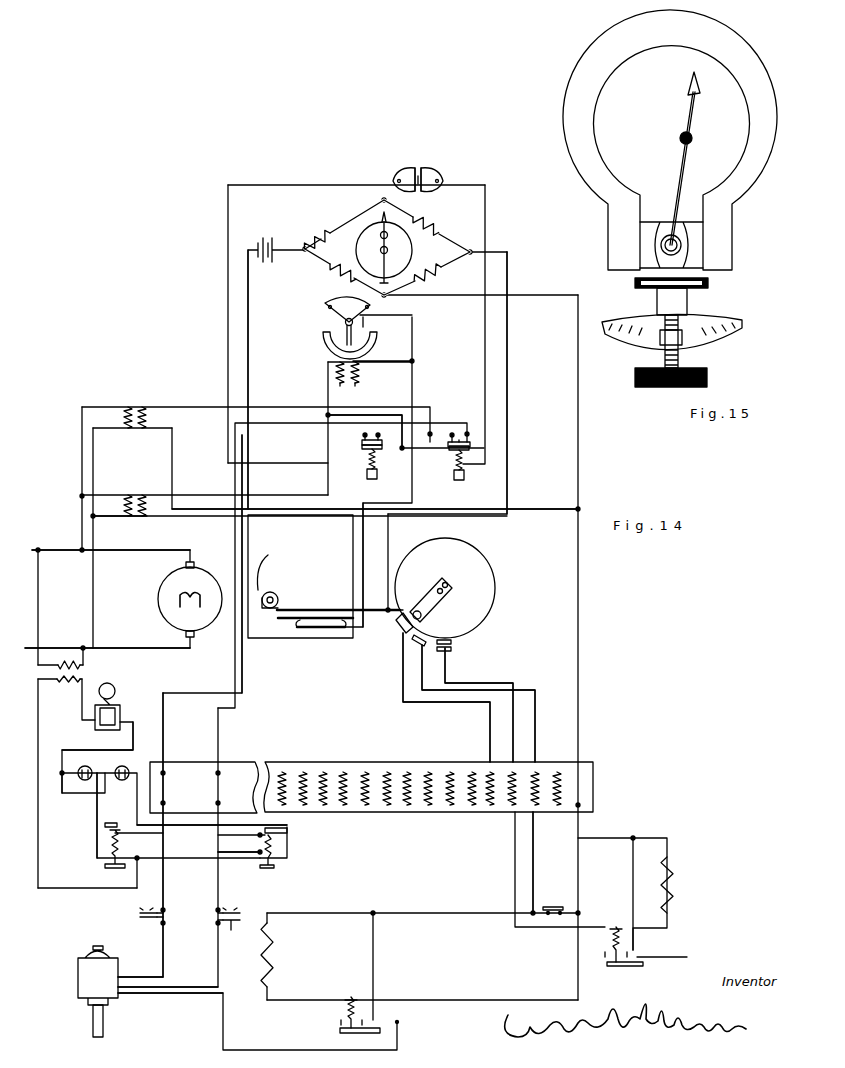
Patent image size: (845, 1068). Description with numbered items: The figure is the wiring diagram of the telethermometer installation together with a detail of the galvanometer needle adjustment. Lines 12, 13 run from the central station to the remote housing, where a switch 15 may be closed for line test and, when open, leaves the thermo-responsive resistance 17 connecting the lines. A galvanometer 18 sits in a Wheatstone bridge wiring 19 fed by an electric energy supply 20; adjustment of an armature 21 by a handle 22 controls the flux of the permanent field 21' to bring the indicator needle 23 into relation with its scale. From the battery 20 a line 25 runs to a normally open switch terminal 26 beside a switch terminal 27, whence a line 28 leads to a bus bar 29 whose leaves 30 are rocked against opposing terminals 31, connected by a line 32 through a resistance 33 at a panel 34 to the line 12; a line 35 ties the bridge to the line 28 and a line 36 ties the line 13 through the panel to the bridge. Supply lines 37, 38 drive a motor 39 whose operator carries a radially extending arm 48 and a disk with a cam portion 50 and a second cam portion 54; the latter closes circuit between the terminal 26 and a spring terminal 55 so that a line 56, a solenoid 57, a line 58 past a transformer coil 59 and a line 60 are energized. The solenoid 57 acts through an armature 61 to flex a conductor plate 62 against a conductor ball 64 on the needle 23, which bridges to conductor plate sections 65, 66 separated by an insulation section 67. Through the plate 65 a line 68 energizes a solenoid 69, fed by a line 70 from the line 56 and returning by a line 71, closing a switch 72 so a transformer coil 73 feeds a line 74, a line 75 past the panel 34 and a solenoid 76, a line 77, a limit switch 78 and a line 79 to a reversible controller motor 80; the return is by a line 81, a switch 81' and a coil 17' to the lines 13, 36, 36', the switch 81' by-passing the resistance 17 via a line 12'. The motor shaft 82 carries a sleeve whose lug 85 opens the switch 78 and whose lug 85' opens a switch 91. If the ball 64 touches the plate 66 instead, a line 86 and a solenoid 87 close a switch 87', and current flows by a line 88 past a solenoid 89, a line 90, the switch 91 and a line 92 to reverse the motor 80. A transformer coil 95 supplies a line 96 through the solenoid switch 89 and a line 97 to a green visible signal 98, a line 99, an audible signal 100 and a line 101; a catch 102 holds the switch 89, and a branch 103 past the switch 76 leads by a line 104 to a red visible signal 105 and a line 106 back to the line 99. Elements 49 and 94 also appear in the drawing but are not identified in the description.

In FIG. 14, the line 12 is at (500, 862).
In FIG. 14, the line 12' is at (516, 929).
In FIG. 14, the line 13 is at (468, 993).
In FIG. 14, the switch 15 is at (553, 911).
In FIG. 14, the thermo-responsive resistance 17 is at (489, 927).
In FIG. 14, the coil 17' is at (478, 967).
In FIG. 14, the galvanometer 18 is at (412, 264).
In FIG. 15, the galvanometer 18 is at (744, 328).
In FIG. 14, the Wheatstone bridge wiring 19 is at (327, 222).
In FIG. 14, the electric energy supply 20 is at (280, 222).
In FIG. 15, the armature 21 is at (692, 296).
In FIG. 15, the galvanometer permanent field 21' is at (674, 140).
In FIG. 15, the handle 22 is at (710, 372).
In FIG. 14, the indicator needle 23 is at (386, 253).
In FIG. 15, the indicator needle 23 is at (687, 162).
In FIG. 14, the line 25 is at (248, 388).
In FIG. 14, the switch terminal 26 is at (282, 622).
In FIG. 14, the switch terminal 27 is at (312, 611).
In FIG. 14, the line 28 is at (372, 635).
In FIG. 14, the bus bar 29 is at (420, 539).
In FIG. 14, the leaves 30 is at (432, 636).
In FIG. 14, the opposing terminals 31 is at (410, 650).
In FIG. 14, the line 32 is at (497, 690).
In FIG. 14, the resistance 33 is at (350, 804).
In FIG. 14, the panel 34 is at (240, 762).
In FIG. 14, the line 35 is at (508, 432).
In FIG. 14, the line 36 is at (595, 647).
In FIG. 14, the line 36' is at (375, 468).
In FIG. 14, the electric current supply line 37 is at (74, 535).
In FIG. 14, the electric current supply line 38 is at (92, 622).
In FIG. 14, the motor 39 is at (158, 600).
In FIG. 14, the radially extending arm 48 is at (436, 610).
In FIG. 14, the contact 49 is at (404, 612).
In FIG. 14, the cam portion 50 is at (272, 593).
In FIG. 14, the second cam portion 54 is at (270, 560).
In FIG. 14, the spring terminal 55 is at (306, 624).
In FIG. 14, the line 56 is at (398, 360).
In FIG. 14, the solenoid 57 is at (360, 372).
In FIG. 14, the line 58 is at (328, 388).
In FIG. 14, the transformer coil 59 is at (145, 496).
In FIG. 14, the line 60 is at (310, 516).
In FIG. 14, the armature 61 is at (338, 342).
In FIG. 14, the conductor plate 62 is at (346, 300).
In FIG. 14, the conductor ball 64 is at (380, 247).
In FIG. 15, the conductor ball 64 is at (692, 137).
In FIG. 14, the conductor plate section 65 is at (410, 168).
In FIG. 14, the conductor plate section 66 is at (426, 171).
In FIG. 14, the insulation section 67 is at (419, 168).
In FIG. 14, the line 68 is at (346, 184).
In FIG. 14, the solenoid 69 is at (366, 466).
In FIG. 14, the line 70 is at (413, 333).
In FIG. 14, the line 71 is at (394, 410).
In FIG. 14, the switch 72 is at (362, 441).
In FIG. 14, the transformer coil 73 is at (138, 408).
In FIG. 14, the line 74 is at (426, 407).
In FIG. 14, the line 75 is at (255, 433).
In FIG. 14, the solenoid 76 is at (275, 848).
In FIG. 14, the line 77 is at (218, 890).
In FIG. 14, the limit switch 78 is at (214, 925).
In FIG. 14, the line 79 is at (214, 956).
In FIG. 14, the controller motor 80 is at (80, 974).
In FIG. 14, the line 81 is at (409, 991).
In FIG. 14, the switch 81' is at (491, 1004).
In FIG. 14, the shaft 82 is at (104, 1020).
In FIG. 14, the lug 85 is at (231, 925).
In FIG. 14, the discontinuance limit lug 85' is at (127, 914).
In FIG. 14, the line 86 is at (487, 214).
In FIG. 14, the solenoid 87 is at (448, 467).
In FIG. 14, the switch 87' is at (500, 414).
In FIG. 14, the line 88 is at (459, 423).
In FIG. 14, the solenoid switch 89 is at (123, 845).
In FIG. 14, the line 90 is at (165, 876).
In FIG. 14, the switch 91 is at (175, 913).
In FIG. 14, the line 92 is at (152, 958).
In FIG. 14, the coil box 94 is at (396, 758).
In FIG. 14, the transformer coil 95 is at (84, 664).
In FIG. 14, the line 96 is at (113, 890).
In FIG. 14, the line 97 is at (97, 828).
In FIG. 14, the visible signal 98 is at (95, 766).
In FIG. 14, the line 99 is at (93, 748).
In FIG. 14, the audible signal 100 is at (113, 692).
In FIG. 14, the line 101 is at (84, 700).
In FIG. 14, the catch 102 is at (108, 826).
In FIG. 14, the branch 103 is at (210, 863).
In FIG. 14, the line 104 is at (168, 826).
In FIG. 14, the visible signal 105 is at (126, 766).
In FIG. 14, the line 106 is at (66, 793).